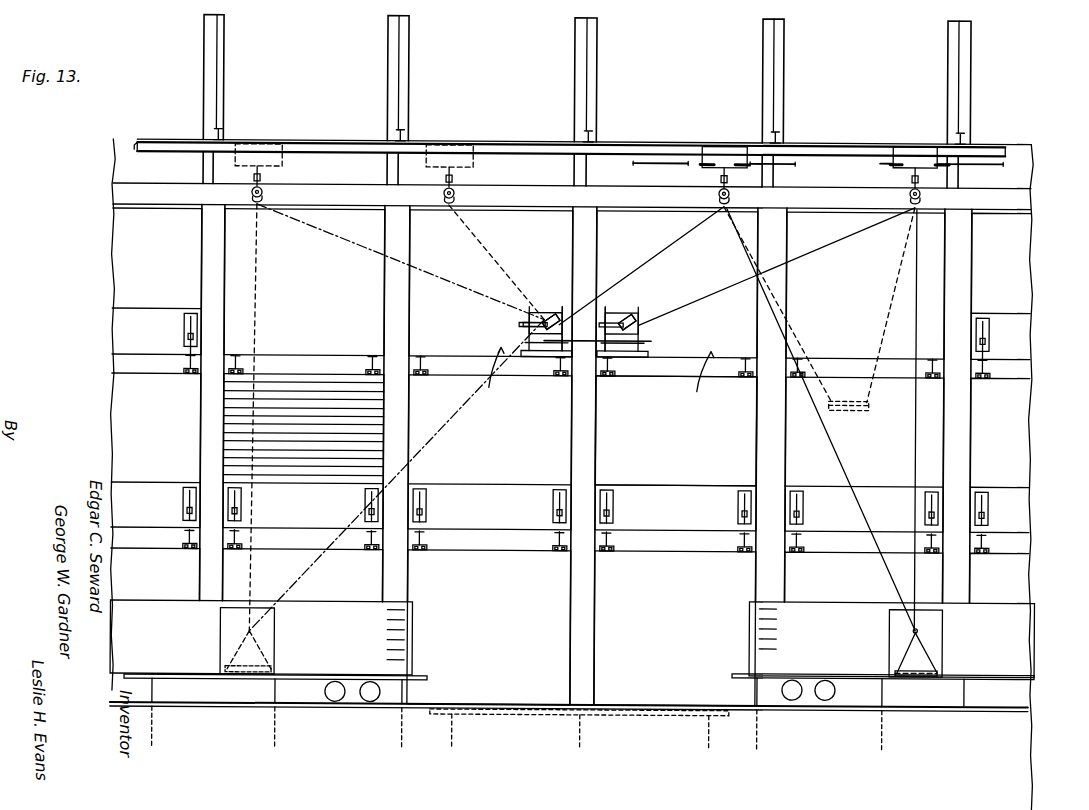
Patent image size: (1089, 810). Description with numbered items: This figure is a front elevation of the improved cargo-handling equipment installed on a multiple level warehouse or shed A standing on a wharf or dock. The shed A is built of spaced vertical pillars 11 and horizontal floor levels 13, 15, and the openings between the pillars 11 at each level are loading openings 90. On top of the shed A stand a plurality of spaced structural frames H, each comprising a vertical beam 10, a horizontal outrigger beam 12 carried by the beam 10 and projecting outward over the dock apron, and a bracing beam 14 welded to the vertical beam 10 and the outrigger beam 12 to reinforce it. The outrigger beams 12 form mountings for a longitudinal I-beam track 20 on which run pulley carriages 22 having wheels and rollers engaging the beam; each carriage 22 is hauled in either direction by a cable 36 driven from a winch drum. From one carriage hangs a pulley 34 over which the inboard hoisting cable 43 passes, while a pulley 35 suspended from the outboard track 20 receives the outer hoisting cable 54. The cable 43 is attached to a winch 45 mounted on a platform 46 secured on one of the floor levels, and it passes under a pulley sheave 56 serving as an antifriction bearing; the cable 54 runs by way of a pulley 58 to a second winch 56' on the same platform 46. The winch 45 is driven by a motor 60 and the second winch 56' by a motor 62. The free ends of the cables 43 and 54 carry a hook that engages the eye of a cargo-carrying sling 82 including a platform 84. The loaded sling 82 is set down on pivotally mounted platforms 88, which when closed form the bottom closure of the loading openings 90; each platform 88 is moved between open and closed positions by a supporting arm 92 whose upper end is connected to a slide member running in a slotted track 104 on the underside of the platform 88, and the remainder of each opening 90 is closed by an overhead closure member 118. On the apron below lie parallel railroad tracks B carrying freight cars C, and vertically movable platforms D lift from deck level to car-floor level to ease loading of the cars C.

The vertical beam 10 is at (386, 101).
The vertical pillars 11 is at (395, 296).
The horizontal outrigger beam 12 is at (410, 136).
The horizontal floor level 13 is at (316, 539).
The bracing beam 14 is at (408, 99).
The horizontal floor level 15 is at (646, 373).
The outboard I-beam track 20 is at (516, 140).
The pulley carriage 22 is at (284, 166).
The pulley 34 is at (268, 198).
The pulley 35 is at (449, 200).
The cable 36 is at (660, 176).
The hoisting cable 43 is at (742, 282).
The winch 45 is at (626, 304).
The platform 46 is at (654, 338).
The outer hoisting cable 54 is at (670, 230).
The pulley sheave 56 is at (647, 307).
The second winch 56' is at (543, 298).
The pulley 58 is at (564, 306).
The motor 60 is at (606, 310).
The motor 62 is at (546, 329).
The cargo-carrying sling 82 is at (940, 636).
The platform 84 is at (942, 671).
The platform 88 is at (150, 316).
The loading opening 90 is at (595, 375).
The supporting arm 92 is at (246, 370).
The slotted track 104 is at (248, 350).
The overhead closure member 118 is at (232, 411).
The warehouse or shed A is at (105, 273).
The railroad tracks B is at (249, 712).
The freight cars C is at (572, 675).
The vertically movable platform D is at (553, 714).
The structural frame H is at (379, 63).